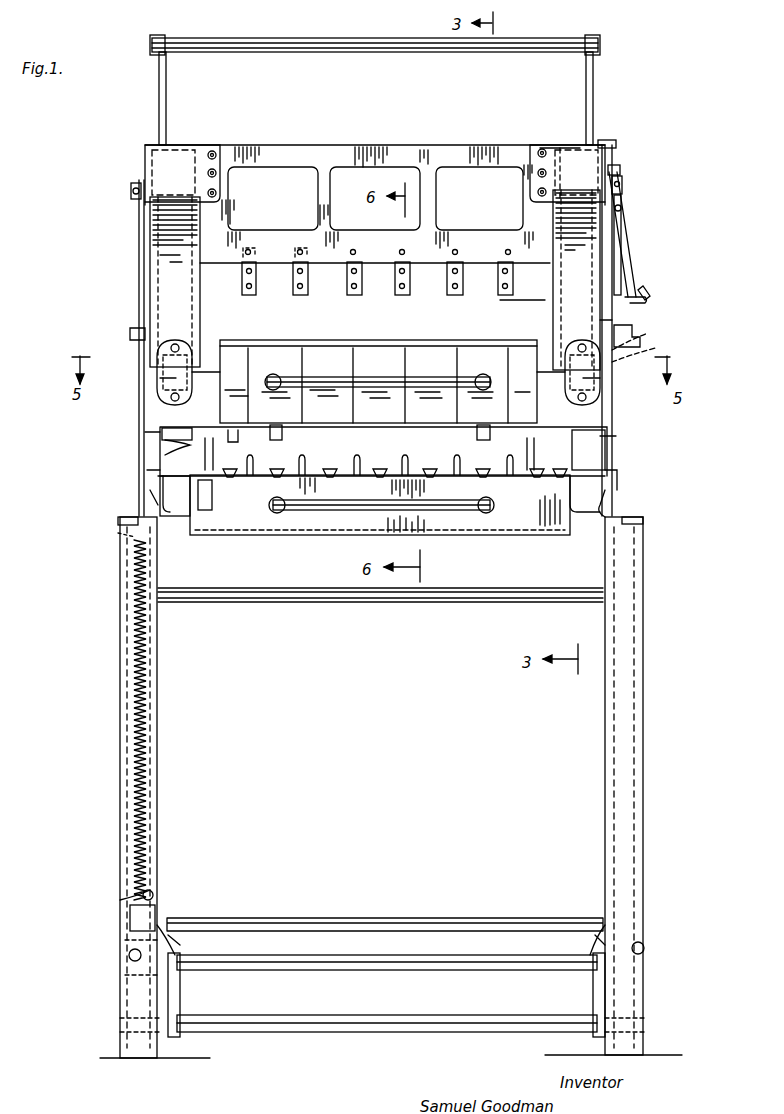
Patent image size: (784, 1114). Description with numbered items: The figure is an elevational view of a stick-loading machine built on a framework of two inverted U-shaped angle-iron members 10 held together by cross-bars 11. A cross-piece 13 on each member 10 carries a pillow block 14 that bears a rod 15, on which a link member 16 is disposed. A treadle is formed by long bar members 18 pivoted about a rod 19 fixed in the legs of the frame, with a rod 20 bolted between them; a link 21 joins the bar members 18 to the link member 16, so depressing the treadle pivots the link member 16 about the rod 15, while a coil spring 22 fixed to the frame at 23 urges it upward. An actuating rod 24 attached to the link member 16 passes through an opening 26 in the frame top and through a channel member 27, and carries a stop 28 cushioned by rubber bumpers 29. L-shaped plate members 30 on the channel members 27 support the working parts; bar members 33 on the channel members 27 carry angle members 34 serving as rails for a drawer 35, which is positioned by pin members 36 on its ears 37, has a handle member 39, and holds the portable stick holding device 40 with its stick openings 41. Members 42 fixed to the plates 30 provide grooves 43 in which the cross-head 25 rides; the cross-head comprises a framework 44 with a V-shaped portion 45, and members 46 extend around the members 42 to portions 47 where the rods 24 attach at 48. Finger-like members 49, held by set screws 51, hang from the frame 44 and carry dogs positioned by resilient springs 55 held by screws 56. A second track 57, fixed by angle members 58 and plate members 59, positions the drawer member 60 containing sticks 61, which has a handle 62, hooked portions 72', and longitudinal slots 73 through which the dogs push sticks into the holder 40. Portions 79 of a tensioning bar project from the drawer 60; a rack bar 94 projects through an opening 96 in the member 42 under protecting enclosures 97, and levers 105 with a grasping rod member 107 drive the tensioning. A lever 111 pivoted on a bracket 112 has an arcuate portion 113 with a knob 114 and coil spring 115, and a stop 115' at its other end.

The framework member 10 is at (120, 700).
The cross-bar 11 is at (248, 603).
The cross-piece 13 is at (128, 956).
The pillow block 14 is at (128, 920).
The rod 15 is at (323, 918).
The link member 16 is at (140, 900).
The bar member 18 is at (180, 1012).
The rod 19 is at (262, 1033).
The rod 20 is at (412, 968).
The link 21 is at (180, 948).
The coil spring 22 is at (150, 790).
The spring attachment point 23 is at (105, 535).
The actuating rod 24 is at (138, 262).
The cross-head 25 is at (595, 150).
The opening 26 is at (157, 553).
The channel member 27 is at (148, 478).
The stop 28 is at (130, 333).
The rubber bumper 29 is at (135, 517).
The L-shaped plate member 30 is at (632, 250).
The bar member 33 is at (150, 435).
The angle member 34 is at (180, 512).
The drawer 35 is at (258, 538).
The pin member 36 is at (472, 470).
The ear 37 is at (582, 470).
The handle member 39 is at (315, 512).
The stick carrying and holding device 40 is at (206, 490).
The stick opening 41 is at (335, 462).
The track member 42 is at (165, 297).
The groove 43 is at (556, 146).
The framework 44 is at (398, 148).
The V-shaped portion 45 is at (553, 262).
The member 46 is at (158, 160).
The portion 47 is at (140, 160).
The attachment point 48 is at (130, 191).
The finger-like member 49 is at (247, 283).
The set screw 51 is at (252, 251).
The resilient spring 55 is at (244, 272).
The screw 56 is at (300, 272).
The second track 57 is at (240, 440).
The angle member 58 is at (162, 433).
The plate member 59 is at (181, 448).
The drawer member 60 is at (393, 338).
The stick 61 is at (298, 462).
The handle 62 is at (343, 370).
The hooked portion 72' is at (380, 436).
The longitudinal slot 73 is at (445, 372).
The outwardly extending portion 79 is at (195, 376).
The rack bar 94 is at (656, 348).
The opening 96 is at (650, 330).
The protecting enclosure 97 is at (160, 384).
The lever 105 is at (166, 86).
The rod member 107 is at (325, 52).
The lever 111 is at (622, 228).
The bracket 112 is at (622, 208).
The arcuate portion 113 is at (638, 304).
The knob 114 is at (648, 293).
The coil spring 115 is at (589, 310).
The stop 115' is at (649, 153).